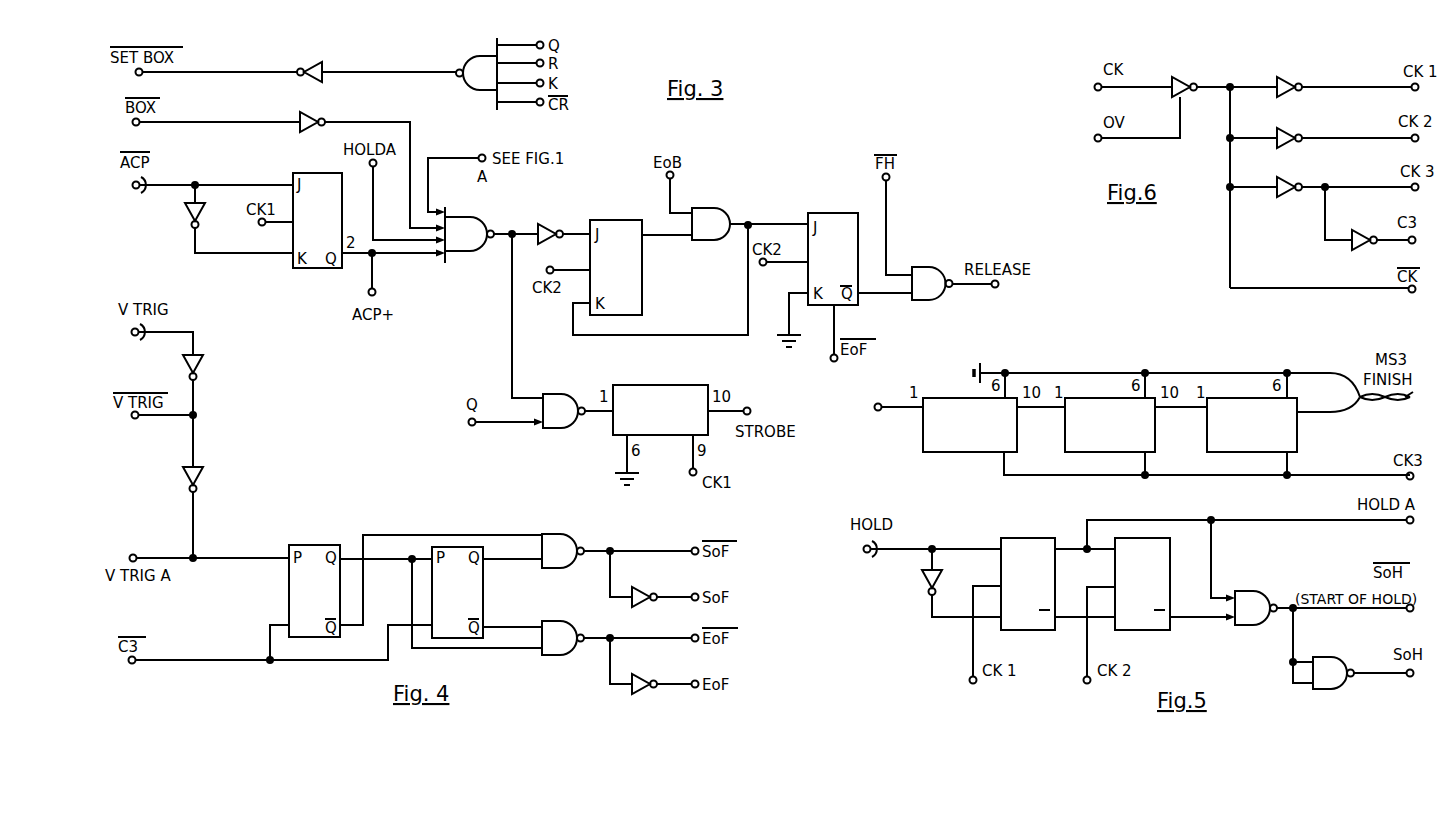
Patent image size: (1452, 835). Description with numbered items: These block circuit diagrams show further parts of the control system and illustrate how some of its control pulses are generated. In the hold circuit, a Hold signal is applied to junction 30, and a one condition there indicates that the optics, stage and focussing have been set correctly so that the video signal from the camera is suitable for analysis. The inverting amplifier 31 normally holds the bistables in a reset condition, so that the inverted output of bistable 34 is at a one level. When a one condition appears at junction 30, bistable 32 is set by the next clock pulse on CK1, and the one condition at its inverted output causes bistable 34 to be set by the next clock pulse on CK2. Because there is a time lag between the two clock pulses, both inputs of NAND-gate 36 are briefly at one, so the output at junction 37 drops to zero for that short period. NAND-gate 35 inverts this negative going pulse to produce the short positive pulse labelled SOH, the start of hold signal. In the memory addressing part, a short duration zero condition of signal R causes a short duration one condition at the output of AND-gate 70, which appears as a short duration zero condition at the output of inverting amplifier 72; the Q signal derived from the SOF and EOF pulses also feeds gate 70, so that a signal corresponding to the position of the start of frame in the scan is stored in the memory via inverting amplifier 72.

In FIG. 3, the AND-gate 70 is at (500, 74).
In FIG. 3, the inverting amplifier 72 is at (309, 63).
In FIG. 5, the junction 30 is at (862, 558).
In FIG. 5, the inverting amplifier 31 is at (923, 573).
In FIG. 5, the bistable 32 is at (1028, 584).
In FIG. 5, the bistable 34 is at (1142, 584).
In FIG. 5, the NAND-gate 35 is at (1333, 673).
In FIG. 5, the NAND-gate 36 is at (1256, 608).
In FIG. 5, the junction 37 is at (1341, 618).